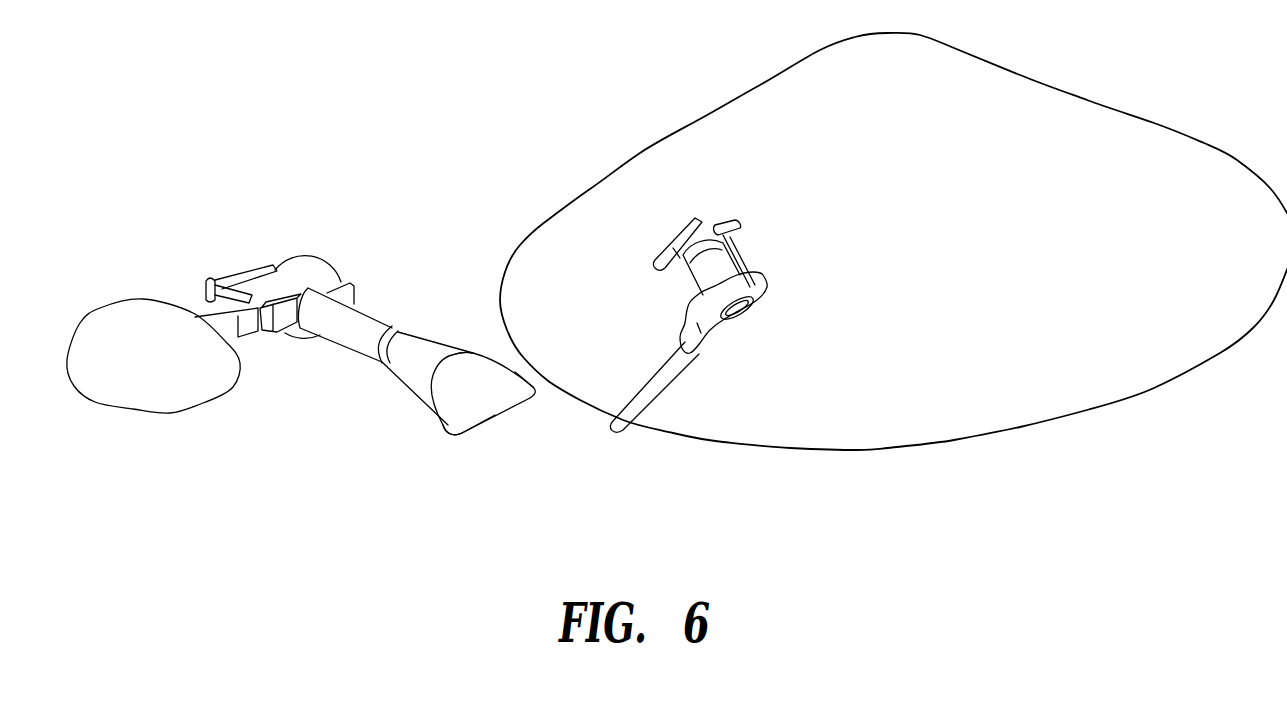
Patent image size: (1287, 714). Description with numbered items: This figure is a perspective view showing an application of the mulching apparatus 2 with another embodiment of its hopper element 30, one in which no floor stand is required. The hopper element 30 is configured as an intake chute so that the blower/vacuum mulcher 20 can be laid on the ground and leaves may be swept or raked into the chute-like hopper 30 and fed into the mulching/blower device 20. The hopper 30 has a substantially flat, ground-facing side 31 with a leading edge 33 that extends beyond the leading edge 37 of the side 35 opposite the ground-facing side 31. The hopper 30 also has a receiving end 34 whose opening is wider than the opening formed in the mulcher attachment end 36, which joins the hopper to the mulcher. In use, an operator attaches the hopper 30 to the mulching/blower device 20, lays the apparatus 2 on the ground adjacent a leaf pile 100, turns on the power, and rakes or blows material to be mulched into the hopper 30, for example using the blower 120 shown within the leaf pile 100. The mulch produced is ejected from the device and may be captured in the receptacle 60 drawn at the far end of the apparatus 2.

The mulching apparatus 2 is at (322, 347).
The mulching/blower device 20 is at (300, 270).
The hopper element 30 is at (430, 398).
The ground-facing side 31 is at (503, 407).
The leading edge 33 is at (480, 432).
The receiving end 34 is at (452, 435).
The side opposite the ground-facing side 35 is at (437, 352).
The mulcher attachment end 36 is at (390, 327).
The leading edge 37 is at (457, 356).
The receptacle 60 is at (97, 330).
The leaf pile 100 is at (751, 140).
The blower 120 is at (763, 278).